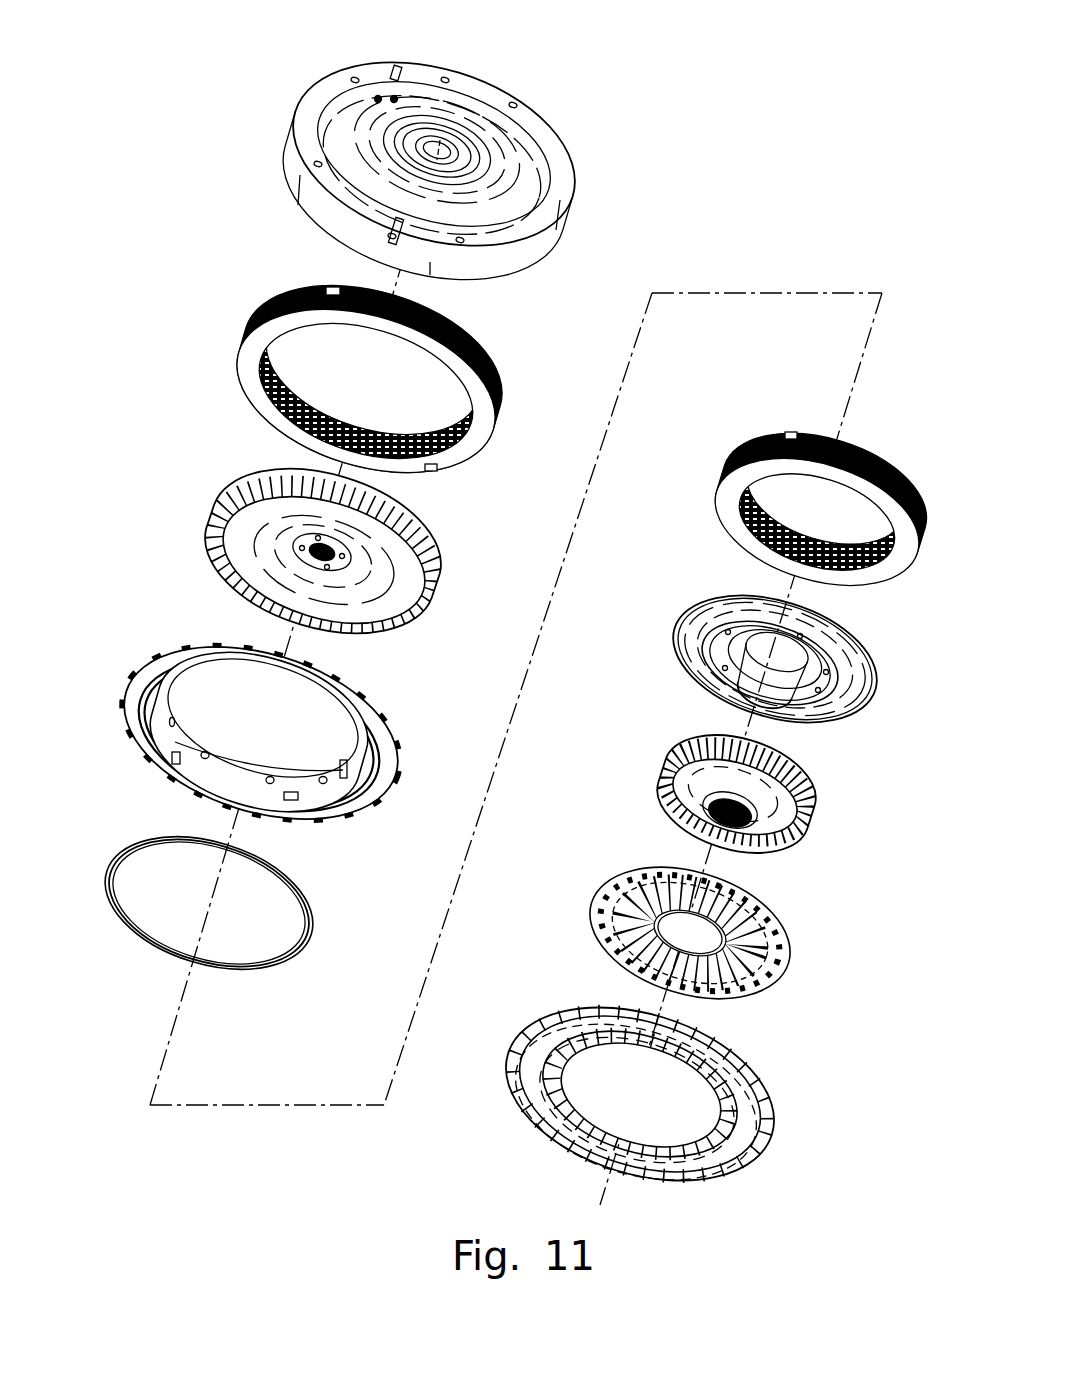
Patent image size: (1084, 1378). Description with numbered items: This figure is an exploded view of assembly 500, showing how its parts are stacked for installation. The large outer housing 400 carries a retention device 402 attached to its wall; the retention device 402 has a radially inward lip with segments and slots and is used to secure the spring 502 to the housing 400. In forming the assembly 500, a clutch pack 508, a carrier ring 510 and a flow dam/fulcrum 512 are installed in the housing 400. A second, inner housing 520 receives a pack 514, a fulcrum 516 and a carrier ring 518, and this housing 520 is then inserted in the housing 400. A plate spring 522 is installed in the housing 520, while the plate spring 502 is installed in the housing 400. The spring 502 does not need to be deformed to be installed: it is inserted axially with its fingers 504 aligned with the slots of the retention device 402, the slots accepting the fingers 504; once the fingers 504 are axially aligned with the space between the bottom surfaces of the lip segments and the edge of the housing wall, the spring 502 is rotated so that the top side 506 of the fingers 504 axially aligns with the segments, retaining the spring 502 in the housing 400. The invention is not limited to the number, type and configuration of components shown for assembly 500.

The assembly 500 is at (162, 105).
The housing 400 is at (483, 90).
The retention device 402 is at (420, 98).
The clutch pack 508 is at (268, 292).
The carrier ring 510 is at (415, 540).
The housing 520 is at (205, 640).
The flow dam/fulcrum 512 is at (118, 855).
The pack 514 is at (880, 440).
The fulcrum 516 is at (690, 617).
The carrier ring 518 is at (655, 772).
The plate spring 522 is at (592, 887).
The spring 502 is at (669, 1070).
The fingers 504 is at (765, 1068).
The top side 506 is at (745, 1150).